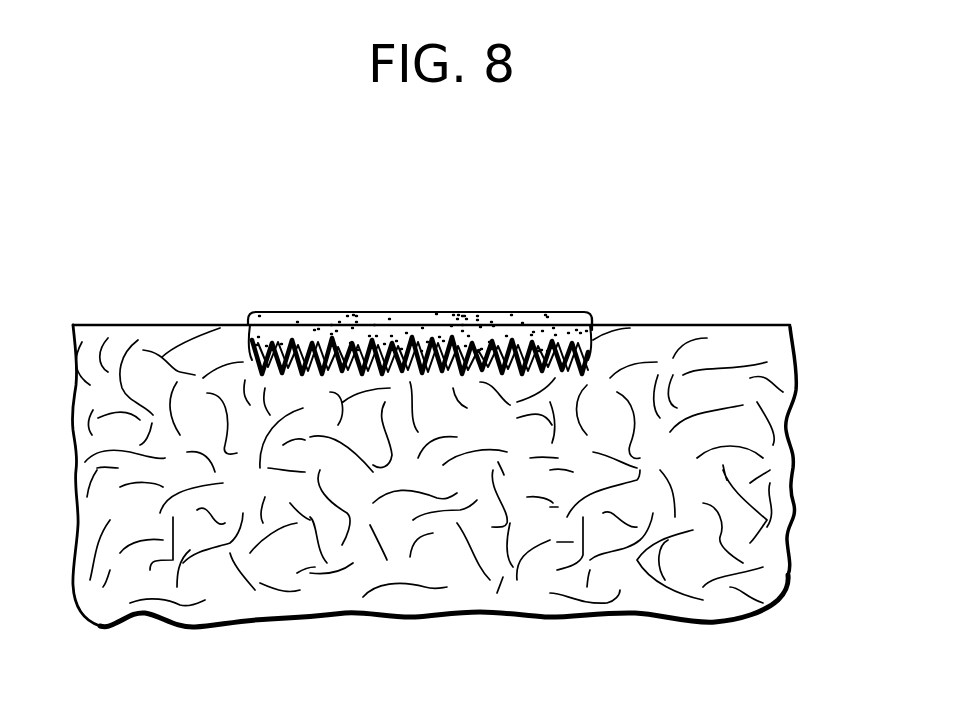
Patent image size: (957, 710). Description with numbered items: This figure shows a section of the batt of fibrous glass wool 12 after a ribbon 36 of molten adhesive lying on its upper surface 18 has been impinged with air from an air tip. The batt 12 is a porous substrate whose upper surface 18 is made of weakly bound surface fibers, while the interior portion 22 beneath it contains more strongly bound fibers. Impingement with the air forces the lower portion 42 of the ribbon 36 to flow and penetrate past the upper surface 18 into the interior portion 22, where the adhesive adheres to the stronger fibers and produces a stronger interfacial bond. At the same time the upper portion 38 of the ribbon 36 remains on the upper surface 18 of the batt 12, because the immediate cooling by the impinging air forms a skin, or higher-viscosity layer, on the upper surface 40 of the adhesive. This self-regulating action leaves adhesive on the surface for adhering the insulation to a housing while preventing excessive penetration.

The batt of fibrous glass wool 12 is at (118, 596).
The upper surface 18 is at (745, 327).
The interior portion 22 is at (757, 480).
The ribbon of adhesive 36 is at (266, 302).
The upper portion 38 is at (594, 323).
The upper surface of the adhesive 40 is at (412, 313).
The lower portion 42 is at (453, 372).